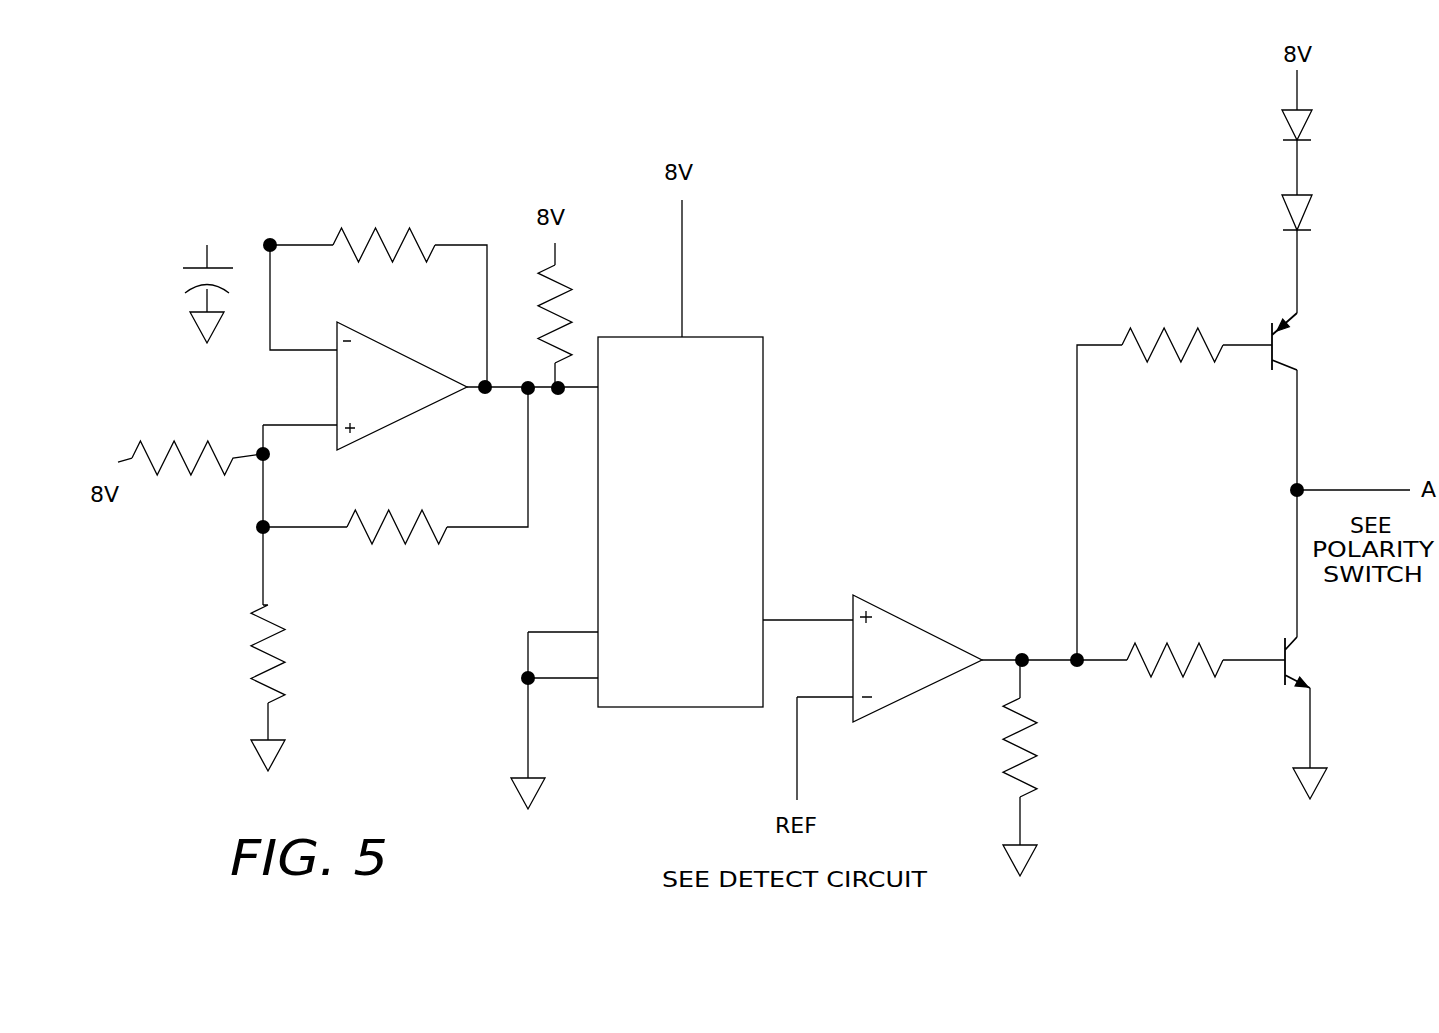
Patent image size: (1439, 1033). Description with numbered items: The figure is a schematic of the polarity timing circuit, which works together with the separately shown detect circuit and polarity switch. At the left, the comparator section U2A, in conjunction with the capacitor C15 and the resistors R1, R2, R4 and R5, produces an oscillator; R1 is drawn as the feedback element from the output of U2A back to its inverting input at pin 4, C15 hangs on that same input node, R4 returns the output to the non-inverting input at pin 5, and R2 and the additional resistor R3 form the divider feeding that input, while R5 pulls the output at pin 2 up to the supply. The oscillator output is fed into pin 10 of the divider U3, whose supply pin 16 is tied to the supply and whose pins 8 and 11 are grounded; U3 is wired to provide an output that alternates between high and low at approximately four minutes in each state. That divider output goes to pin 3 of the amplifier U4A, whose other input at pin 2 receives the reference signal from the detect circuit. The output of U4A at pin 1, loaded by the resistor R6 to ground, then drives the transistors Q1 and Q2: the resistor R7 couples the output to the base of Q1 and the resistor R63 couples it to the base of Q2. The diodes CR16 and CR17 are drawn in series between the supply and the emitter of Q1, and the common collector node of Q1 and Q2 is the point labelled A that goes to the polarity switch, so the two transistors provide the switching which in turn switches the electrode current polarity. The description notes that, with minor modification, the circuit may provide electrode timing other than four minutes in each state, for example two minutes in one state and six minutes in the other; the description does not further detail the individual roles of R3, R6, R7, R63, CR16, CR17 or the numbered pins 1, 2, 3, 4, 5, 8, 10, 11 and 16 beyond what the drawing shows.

The capacitor C15 is at (180, 278).
The resistor R1 is at (379, 228).
The resistor R2 is at (295, 654).
The resistor R3 75K R3 is at (190, 460).
The resistor R4 is at (393, 541).
The resistor R5 is at (574, 314).
The resistor R6 4.7K R6 is at (1050, 740).
The resistor R7 2.7K R7 is at (1162, 306).
The resistor R63 1K R63 is at (1175, 661).
The oscillator comparator U2A is at (411, 388).
The divider U3 is at (680, 522).
The driver amplifier U4A is at (917, 672).
The transistor Q1 is at (1334, 337).
The transistor Q2 is at (1354, 676).
The diode CR16 is at (1330, 129).
The diode CR17 is at (1333, 215).
The pin 1 is at (567, 463).
The pin 2 is at (653, 544).
The pin 3 is at (834, 603).
The pin 4 is at (316, 336).
The pin 5 is at (319, 411).
The pin 8 is at (555, 613).
The pin 10 is at (577, 376).
The pin 11 is at (558, 663).
The pin 16 is at (712, 315).